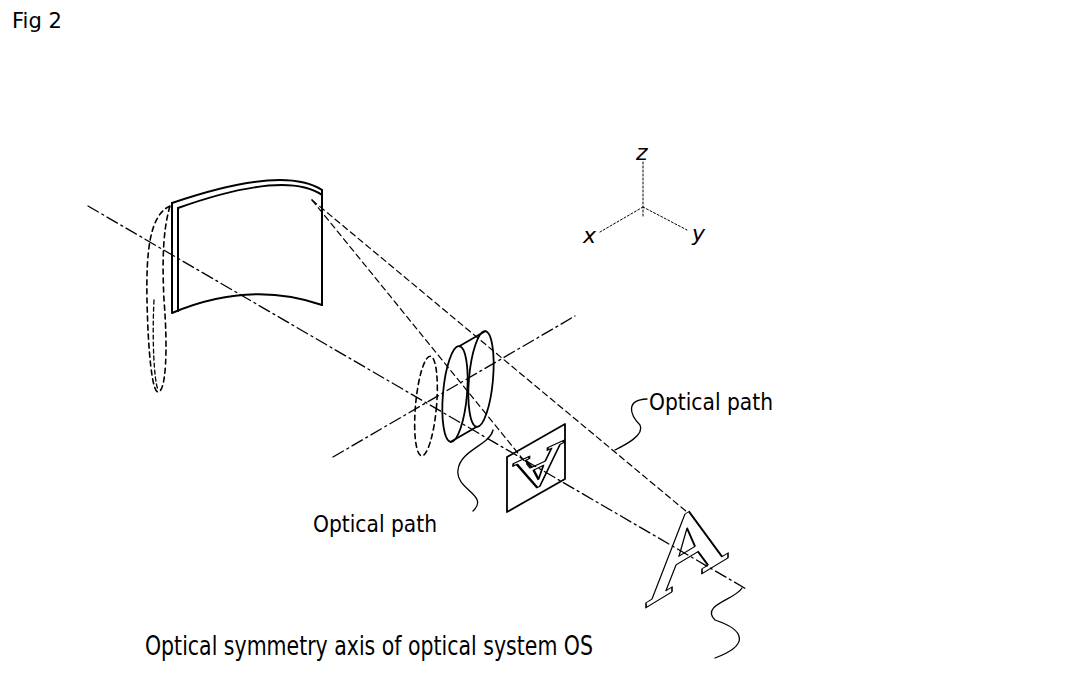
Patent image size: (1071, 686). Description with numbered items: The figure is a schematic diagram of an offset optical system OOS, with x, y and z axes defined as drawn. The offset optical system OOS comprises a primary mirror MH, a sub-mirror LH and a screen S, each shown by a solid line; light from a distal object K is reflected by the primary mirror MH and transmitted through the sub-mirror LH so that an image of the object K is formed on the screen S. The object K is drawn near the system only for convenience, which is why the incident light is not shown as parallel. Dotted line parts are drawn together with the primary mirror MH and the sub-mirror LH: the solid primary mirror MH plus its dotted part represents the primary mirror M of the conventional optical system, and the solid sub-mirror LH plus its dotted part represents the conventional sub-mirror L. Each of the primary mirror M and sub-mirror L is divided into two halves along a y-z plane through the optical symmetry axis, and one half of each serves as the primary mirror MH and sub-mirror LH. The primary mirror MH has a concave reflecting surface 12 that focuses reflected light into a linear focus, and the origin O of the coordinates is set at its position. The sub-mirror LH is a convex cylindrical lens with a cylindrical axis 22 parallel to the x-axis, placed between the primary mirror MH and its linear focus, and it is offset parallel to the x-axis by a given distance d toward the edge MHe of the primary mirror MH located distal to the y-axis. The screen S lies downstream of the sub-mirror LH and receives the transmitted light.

The reflecting surface 12 is at (268, 213).
The cylindrical axis 22 is at (373, 433).
The primary mirror MH is at (266, 184).
The edge of the primary mirror MHe is at (322, 270).
The origin O is at (190, 255).
The offset optical system OOS is at (487, 172).
The primary mirror of the conventional optical system M is at (150, 298).
The sub-mirror LH is at (486, 334).
The offset distance d is at (425, 383).
The sub-mirror of the conventional optical system L is at (445, 440).
The screen S is at (518, 487).
The object K is at (692, 538).